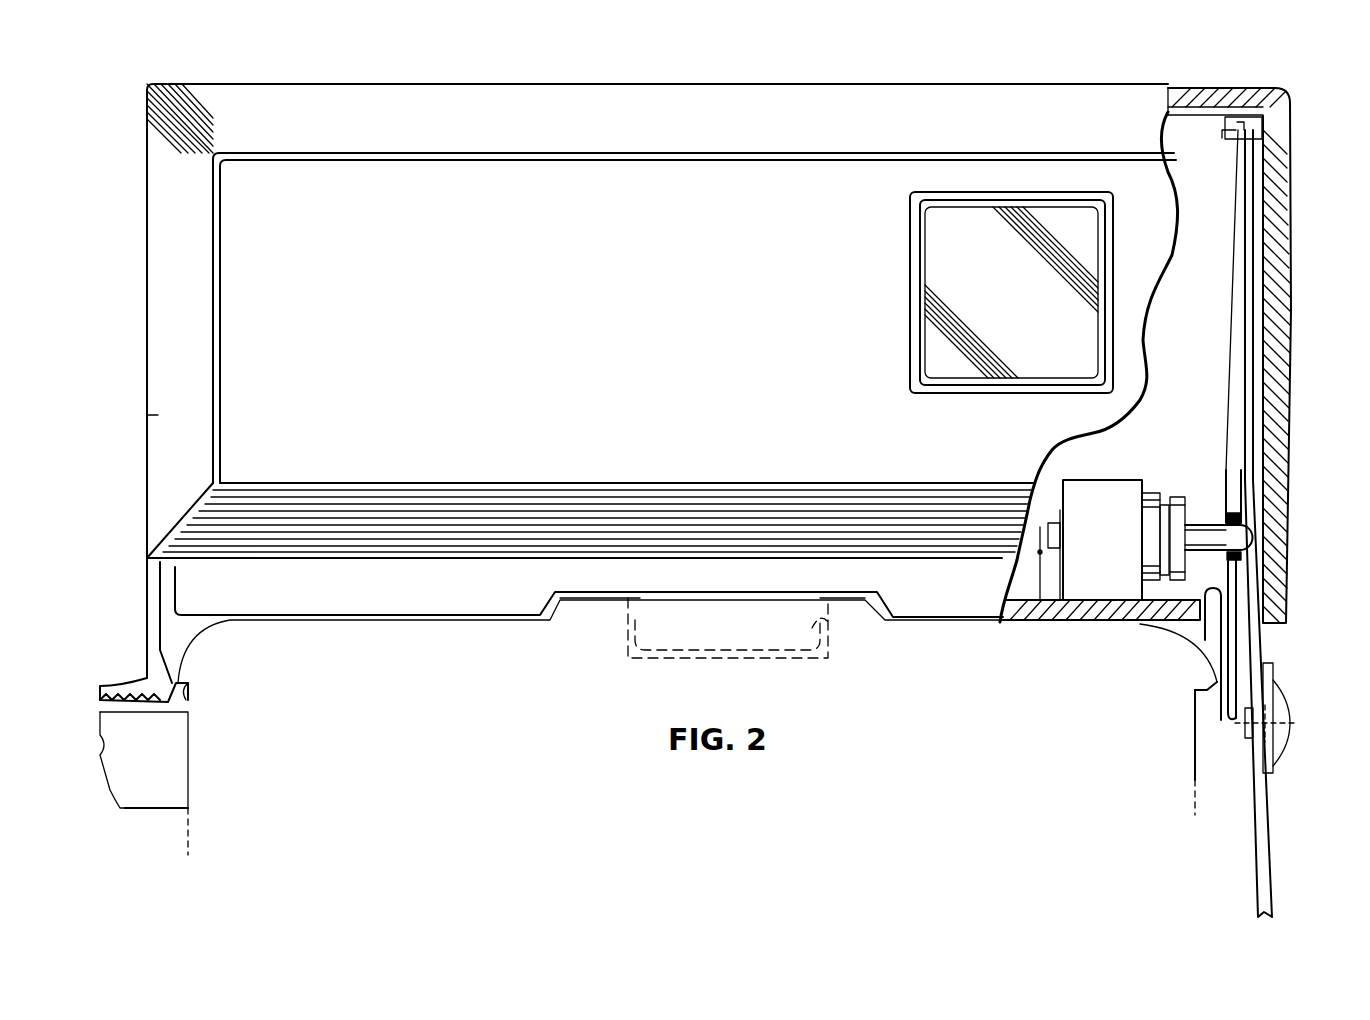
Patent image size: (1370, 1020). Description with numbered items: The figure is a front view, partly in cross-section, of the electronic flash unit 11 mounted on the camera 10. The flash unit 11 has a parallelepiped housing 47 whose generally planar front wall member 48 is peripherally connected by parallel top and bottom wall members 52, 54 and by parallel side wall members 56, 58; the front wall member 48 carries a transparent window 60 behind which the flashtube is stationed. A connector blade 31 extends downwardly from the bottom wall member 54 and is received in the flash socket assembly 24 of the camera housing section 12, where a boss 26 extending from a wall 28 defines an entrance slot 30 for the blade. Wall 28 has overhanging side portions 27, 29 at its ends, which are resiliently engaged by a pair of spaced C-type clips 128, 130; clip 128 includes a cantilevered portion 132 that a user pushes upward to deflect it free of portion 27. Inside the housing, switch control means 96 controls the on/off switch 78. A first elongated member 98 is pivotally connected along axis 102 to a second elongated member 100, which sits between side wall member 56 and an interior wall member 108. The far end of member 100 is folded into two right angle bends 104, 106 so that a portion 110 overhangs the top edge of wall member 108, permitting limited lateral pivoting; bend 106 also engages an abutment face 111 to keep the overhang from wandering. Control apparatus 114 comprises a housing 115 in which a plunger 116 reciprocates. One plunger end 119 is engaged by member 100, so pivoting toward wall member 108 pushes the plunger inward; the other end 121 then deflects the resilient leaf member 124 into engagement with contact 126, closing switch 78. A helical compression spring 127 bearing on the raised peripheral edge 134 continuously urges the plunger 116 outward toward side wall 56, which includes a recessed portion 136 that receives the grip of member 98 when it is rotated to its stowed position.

The camera 10 is at (222, 800).
The electronic flash unit 11 is at (910, 87).
The housing section 12 is at (185, 766).
The flash socket assembly 24 is at (877, 598).
The boss 26 is at (592, 592).
The overhanging side portion 27 is at (190, 695).
The wall 28 is at (372, 616).
The overhanging side portion 29 is at (1195, 698).
The entrance slot 30 is at (830, 626).
The connector blade 31 is at (626, 636).
The parallelepiped housing 47 is at (628, 85).
The front wall member 48 is at (465, 298).
The top wall member 52 is at (313, 82).
The bottom wall member 54 is at (470, 618).
The side wall member 56 is at (1290, 378).
The side wall member 58 is at (145, 340).
The transparent window 60 is at (1008, 276).
The on/off switch 78 is at (1023, 526).
The switch control means 96 is at (1185, 466).
The first elongated member 98 is at (1277, 813).
The second elongated member 100 is at (1270, 560).
The pivot axis 102 is at (1285, 720).
The right angle bend 104 is at (1278, 135).
The right angle bend 106 is at (1222, 131).
The interior wall member 108 is at (1230, 370).
The overhanging portion 110 is at (1240, 128).
The abutment face 111 is at (1203, 100).
The control apparatus 114 is at (1105, 477).
The housing 115 is at (1063, 446).
The plunger 116 is at (1200, 524).
The plunger end 119 is at (1258, 525).
The plunger end 121 is at (1040, 520).
The resilient leaf member 124 is at (1040, 540).
The contact 126 is at (1025, 490).
The helical compression spring 127 is at (1163, 582).
The C-type clip 128 is at (173, 681).
The C-type clip 130 is at (1210, 722).
The cantilevered portion 132 is at (131, 706).
The raised peripheral edge 134 is at (1167, 500).
The recessed portion 136 is at (1266, 312).